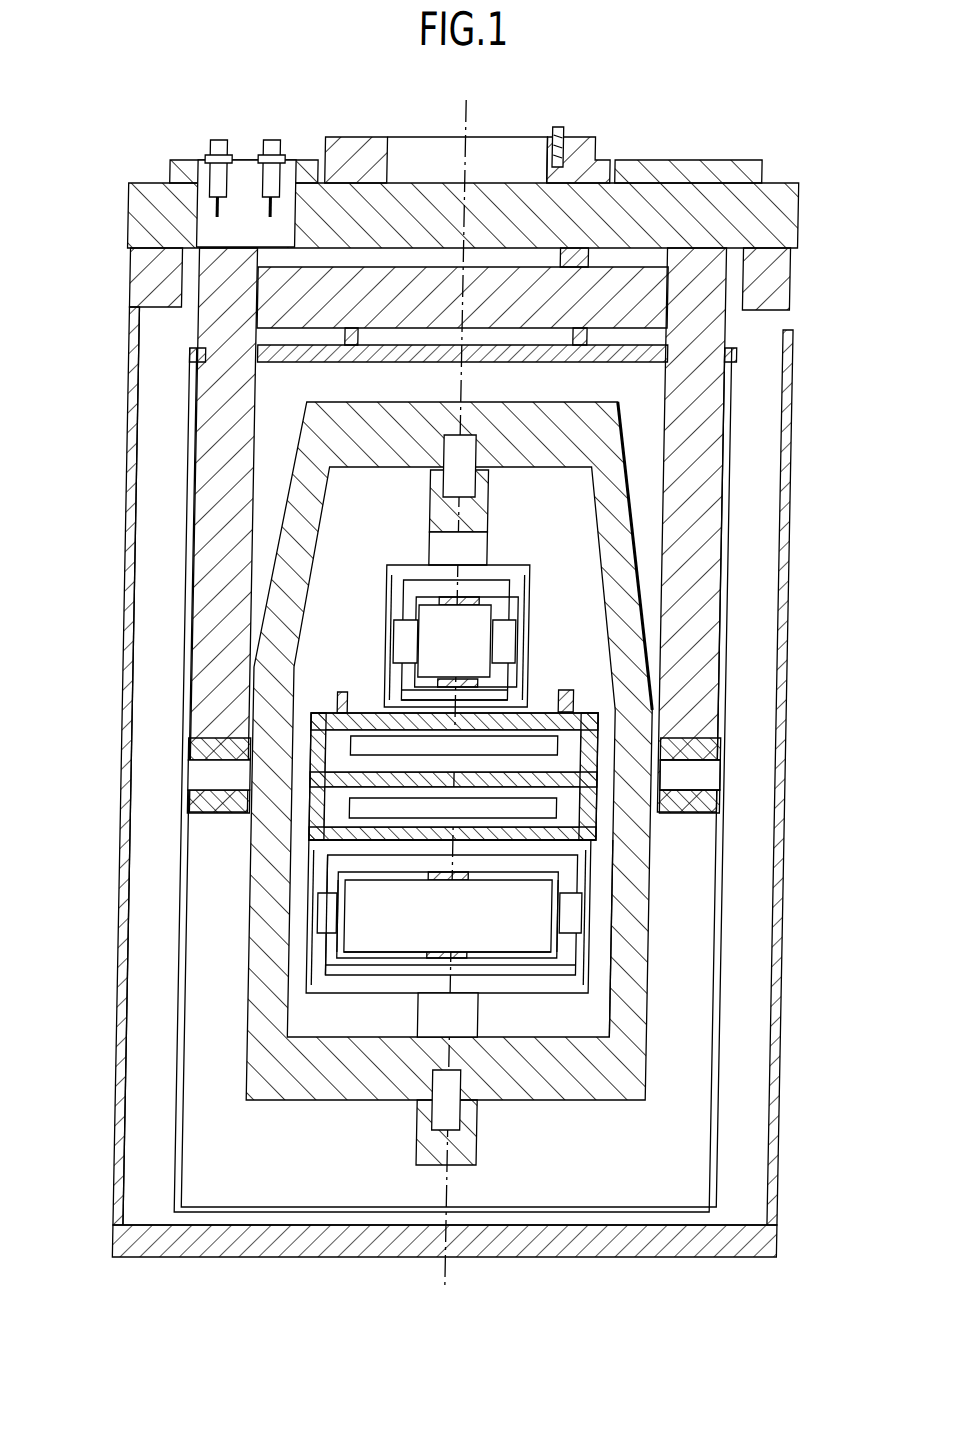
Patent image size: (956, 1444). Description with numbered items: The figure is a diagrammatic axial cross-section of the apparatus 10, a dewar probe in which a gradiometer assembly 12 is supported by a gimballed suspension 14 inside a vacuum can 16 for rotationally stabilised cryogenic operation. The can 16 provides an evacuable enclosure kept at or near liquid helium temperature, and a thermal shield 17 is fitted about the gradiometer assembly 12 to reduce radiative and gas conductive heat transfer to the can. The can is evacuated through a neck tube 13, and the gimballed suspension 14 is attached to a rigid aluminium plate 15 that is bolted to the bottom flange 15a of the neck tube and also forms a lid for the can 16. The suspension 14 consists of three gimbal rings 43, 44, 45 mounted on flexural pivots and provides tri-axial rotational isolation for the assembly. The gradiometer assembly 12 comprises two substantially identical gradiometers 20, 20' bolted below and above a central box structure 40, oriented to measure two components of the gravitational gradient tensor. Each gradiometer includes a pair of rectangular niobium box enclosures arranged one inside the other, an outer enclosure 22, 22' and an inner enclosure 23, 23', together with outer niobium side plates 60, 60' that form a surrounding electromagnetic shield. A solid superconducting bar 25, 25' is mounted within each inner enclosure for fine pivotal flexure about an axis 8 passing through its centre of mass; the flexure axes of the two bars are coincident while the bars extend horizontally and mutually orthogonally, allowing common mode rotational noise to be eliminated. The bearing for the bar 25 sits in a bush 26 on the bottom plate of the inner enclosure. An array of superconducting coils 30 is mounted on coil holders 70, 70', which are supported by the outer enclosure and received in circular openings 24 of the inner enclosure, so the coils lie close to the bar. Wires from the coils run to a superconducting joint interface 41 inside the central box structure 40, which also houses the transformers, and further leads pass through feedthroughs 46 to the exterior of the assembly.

The axis 8 is at (453, 1185).
The apparatus 10 is at (799, 930).
The gradiometer assembly 12 is at (569, 1030).
The neck tube 13 is at (543, 128).
The gimballed suspension 14 is at (485, 483).
The aluminium plate 15 is at (800, 220).
The bottom flange 15a is at (579, 140).
The vacuum can 16 is at (119, 978).
The thermal shield 17 is at (727, 870).
The gradiometer 20 is at (396, 916).
The gradiometer 20' is at (425, 636).
The outer enclosure 22 is at (451, 942).
The outer enclosure 22' is at (426, 608).
The inner enclosure 23 is at (449, 997).
The inner enclosure 23' is at (491, 673).
The circular openings 24 is at (330, 945).
The solid bar 25 is at (450, 955).
The solid bar 25' is at (479, 598).
The bush 26 is at (475, 958).
The superconducting coils 30 is at (358, 897).
The central box structure 40 is at (304, 715).
The superconducting joint interface 41 is at (567, 807).
The gimbal ring 43 is at (723, 822).
The gimbal ring 44 is at (640, 853).
The gimbal ring 45 is at (426, 497).
The feedthroughs 46 is at (349, 693).
The outer niobium side plates 60 is at (454, 928).
The outer niobium side plates 60' is at (501, 629).
The coil holders 70 is at (512, 919).
The coil holders 70' is at (500, 635).